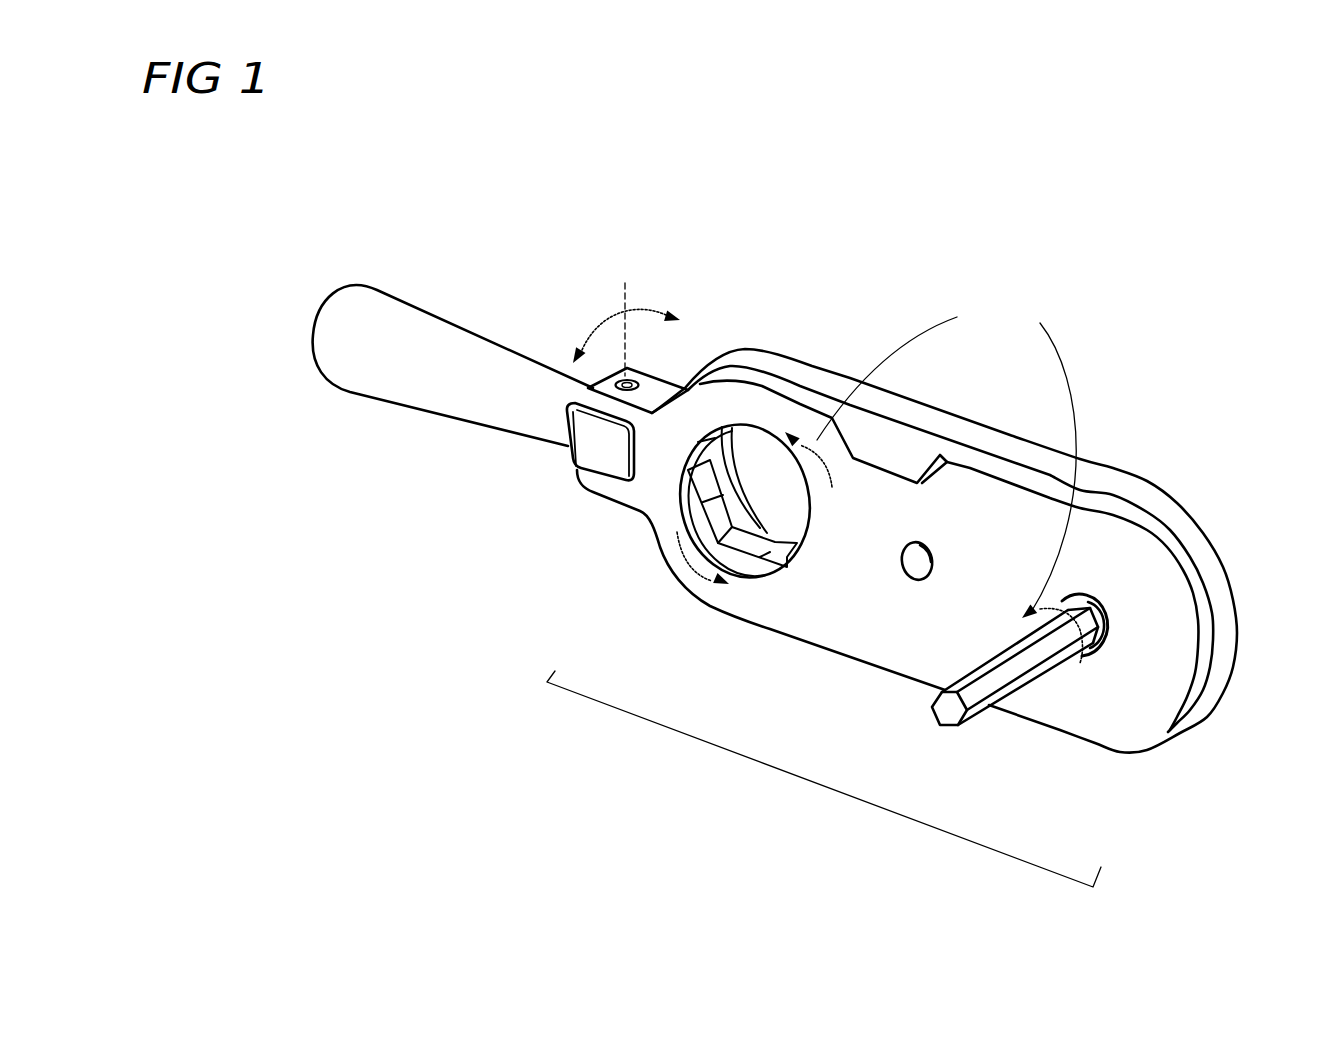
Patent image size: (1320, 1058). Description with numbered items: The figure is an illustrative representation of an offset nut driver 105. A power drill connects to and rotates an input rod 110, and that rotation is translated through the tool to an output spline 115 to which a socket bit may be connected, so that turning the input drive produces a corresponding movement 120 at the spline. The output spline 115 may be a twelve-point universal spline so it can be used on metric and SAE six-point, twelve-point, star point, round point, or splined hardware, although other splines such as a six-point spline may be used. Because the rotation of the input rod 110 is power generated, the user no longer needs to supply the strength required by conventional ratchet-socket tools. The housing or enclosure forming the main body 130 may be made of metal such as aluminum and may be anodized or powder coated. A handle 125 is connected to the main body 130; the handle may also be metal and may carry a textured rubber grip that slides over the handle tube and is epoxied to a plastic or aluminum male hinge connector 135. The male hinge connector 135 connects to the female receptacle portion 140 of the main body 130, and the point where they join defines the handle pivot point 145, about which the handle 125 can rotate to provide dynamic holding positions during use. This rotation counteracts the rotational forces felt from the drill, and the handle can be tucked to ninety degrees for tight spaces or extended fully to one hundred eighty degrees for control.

The offset nut driver 105 is at (1152, 397).
The input rod 110 is at (950, 727).
The output spline 115 is at (703, 482).
The corresponding movement 120 is at (880, 461).
The handle 125 is at (402, 405).
The main body 130 is at (820, 788).
The male hinge connector 135 is at (578, 469).
The female receptacle portion 140 is at (651, 383).
The handle pivot point 145 is at (630, 292).